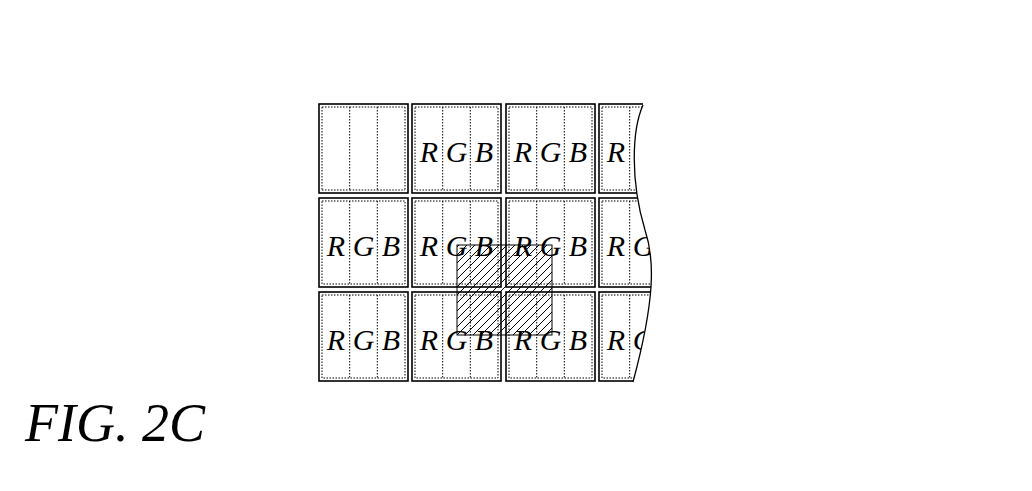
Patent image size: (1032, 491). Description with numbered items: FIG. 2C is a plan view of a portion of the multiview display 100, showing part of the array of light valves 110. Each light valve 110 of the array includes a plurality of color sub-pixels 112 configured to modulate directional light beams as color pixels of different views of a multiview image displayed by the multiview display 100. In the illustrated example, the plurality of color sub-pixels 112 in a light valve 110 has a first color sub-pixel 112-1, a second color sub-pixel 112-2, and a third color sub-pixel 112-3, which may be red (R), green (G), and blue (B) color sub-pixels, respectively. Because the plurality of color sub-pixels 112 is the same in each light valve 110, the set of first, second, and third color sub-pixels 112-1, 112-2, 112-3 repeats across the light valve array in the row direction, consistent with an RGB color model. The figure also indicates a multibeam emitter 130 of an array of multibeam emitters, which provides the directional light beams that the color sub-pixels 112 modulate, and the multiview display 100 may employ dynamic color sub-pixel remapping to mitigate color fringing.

The multiview display 100 is at (760, 57).
The light valve 110 is at (307, 152).
The color sub-pixels 112 is at (367, 110).
The first color sub-pixel 112-1 is at (334, 112).
The second color sub-pixel 112-2 is at (364, 148).
The third color sub-pixel 112-3 is at (397, 110).
The multibeam emitter 130 is at (557, 275).